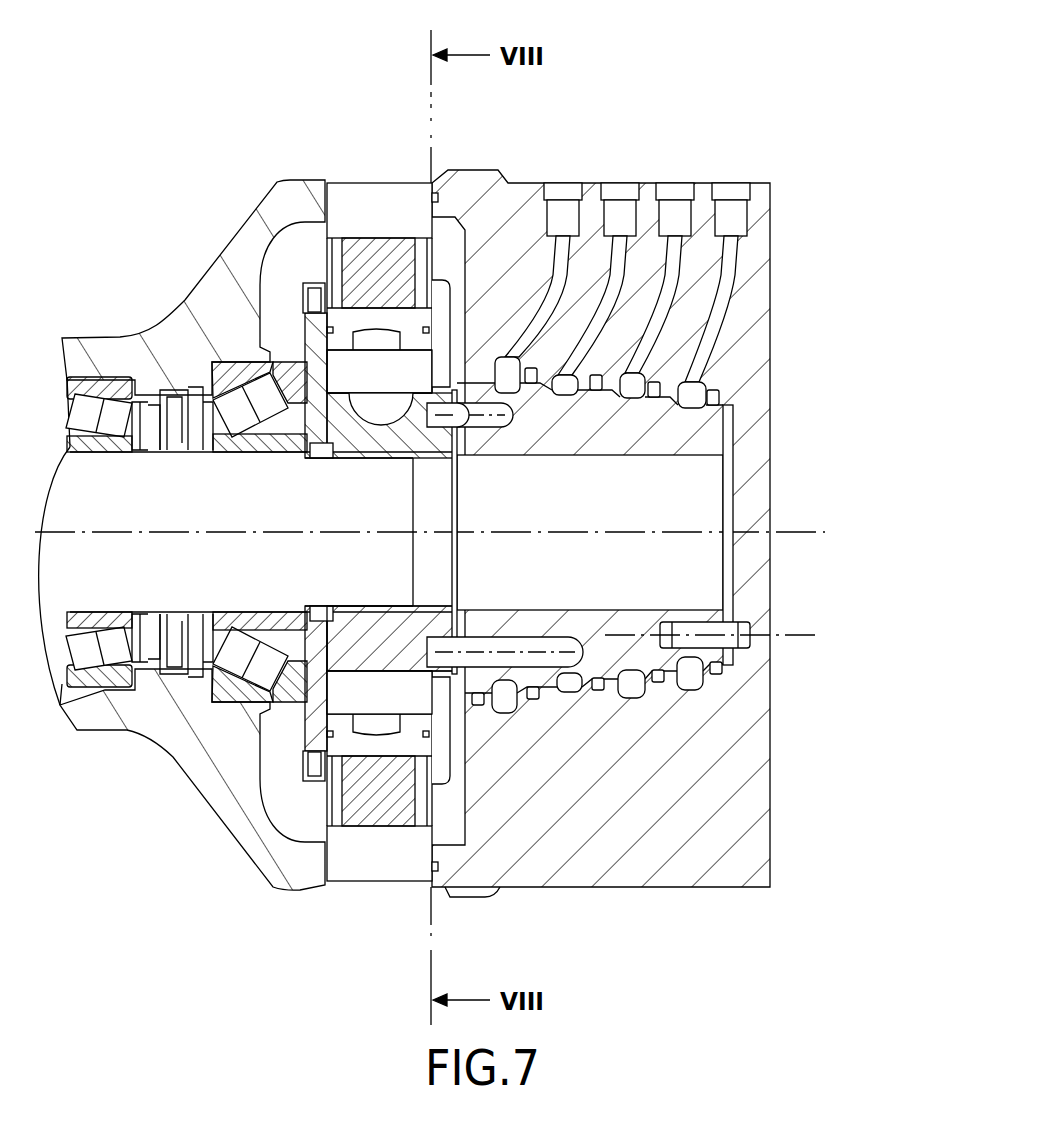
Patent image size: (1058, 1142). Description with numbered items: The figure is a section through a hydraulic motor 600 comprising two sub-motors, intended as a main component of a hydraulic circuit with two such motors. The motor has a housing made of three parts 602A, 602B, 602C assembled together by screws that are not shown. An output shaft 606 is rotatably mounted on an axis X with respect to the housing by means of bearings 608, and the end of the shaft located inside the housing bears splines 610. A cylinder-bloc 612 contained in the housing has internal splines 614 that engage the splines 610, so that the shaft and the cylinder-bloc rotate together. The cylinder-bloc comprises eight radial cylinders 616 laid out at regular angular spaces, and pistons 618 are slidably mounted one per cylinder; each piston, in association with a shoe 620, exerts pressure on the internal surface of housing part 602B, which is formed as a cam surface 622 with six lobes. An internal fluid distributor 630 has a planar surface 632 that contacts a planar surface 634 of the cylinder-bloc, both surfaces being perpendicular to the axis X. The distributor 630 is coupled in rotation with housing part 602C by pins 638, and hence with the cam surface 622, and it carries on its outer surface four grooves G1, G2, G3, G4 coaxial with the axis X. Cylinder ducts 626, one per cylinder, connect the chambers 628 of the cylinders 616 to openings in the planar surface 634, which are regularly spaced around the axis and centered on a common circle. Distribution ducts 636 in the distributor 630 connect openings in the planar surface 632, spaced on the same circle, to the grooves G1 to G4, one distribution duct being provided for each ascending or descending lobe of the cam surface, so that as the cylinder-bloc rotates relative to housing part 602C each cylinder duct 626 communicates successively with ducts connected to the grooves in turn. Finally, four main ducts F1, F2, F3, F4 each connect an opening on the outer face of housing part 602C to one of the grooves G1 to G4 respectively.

The hydraulic motor 600 is at (150, 232).
The housing part 602A is at (117, 343).
The housing part 602B is at (367, 194).
The housing part 602C is at (481, 182).
The output shaft 606 is at (102, 589).
The bearings 608 is at (242, 432).
The splines 610 is at (360, 458).
The cylinder-bloc 612 is at (348, 607).
The internal splines 614 is at (427, 466).
The radial cylinders 616 is at (425, 697).
The pistons 618 is at (391, 703).
The shoe 620 is at (373, 815).
The cam surface 622 is at (380, 250).
The cylinder ducts 626 is at (410, 414).
The chambers 628 is at (352, 402).
The internal fluid distributor 630 is at (610, 620).
The planar surface 632 is at (440, 627).
The planar surface 634 is at (463, 447).
The distribution ducts 636 is at (483, 440).
The pins 638 is at (750, 634).
The main duct F1 is at (563, 187).
The main duct F2 is at (620, 187).
The main duct F3 is at (675, 187).
The main duct F4 is at (730, 187).
The groove G1 is at (500, 357).
The groove G2 is at (566, 397).
The groove G3 is at (630, 400).
The groove G4 is at (690, 408).
The axis X is at (252, 532).